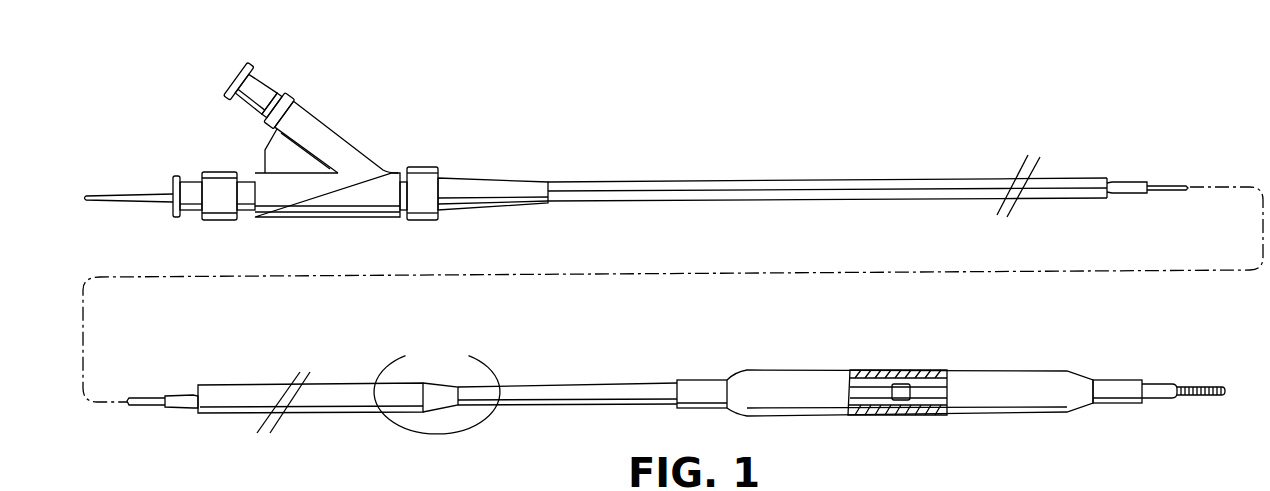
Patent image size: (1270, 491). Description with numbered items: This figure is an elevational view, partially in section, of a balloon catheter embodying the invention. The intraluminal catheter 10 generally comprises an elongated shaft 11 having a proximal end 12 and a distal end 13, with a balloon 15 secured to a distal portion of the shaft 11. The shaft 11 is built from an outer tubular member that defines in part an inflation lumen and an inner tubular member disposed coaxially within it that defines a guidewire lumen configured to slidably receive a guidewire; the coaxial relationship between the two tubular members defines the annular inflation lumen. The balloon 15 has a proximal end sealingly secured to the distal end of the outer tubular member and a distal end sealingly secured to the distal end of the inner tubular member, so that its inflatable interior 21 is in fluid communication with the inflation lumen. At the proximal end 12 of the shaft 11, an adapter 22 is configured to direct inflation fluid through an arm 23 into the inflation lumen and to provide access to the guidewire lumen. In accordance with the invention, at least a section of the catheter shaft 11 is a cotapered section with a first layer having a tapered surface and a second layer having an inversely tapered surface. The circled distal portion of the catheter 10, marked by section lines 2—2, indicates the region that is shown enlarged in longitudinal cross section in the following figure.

The intraluminal catheter 10 is at (768, 108).
The elongated shaft 11 is at (935, 180).
The proximal end 12 is at (600, 183).
The distal end 13 is at (620, 386).
The balloon 15 is at (1022, 372).
The inflatable interior 21 is at (878, 378).
The adapter 22 is at (393, 172).
The arm 23 is at (325, 125).
The detail region of FIG. 2 is at (468, 356).